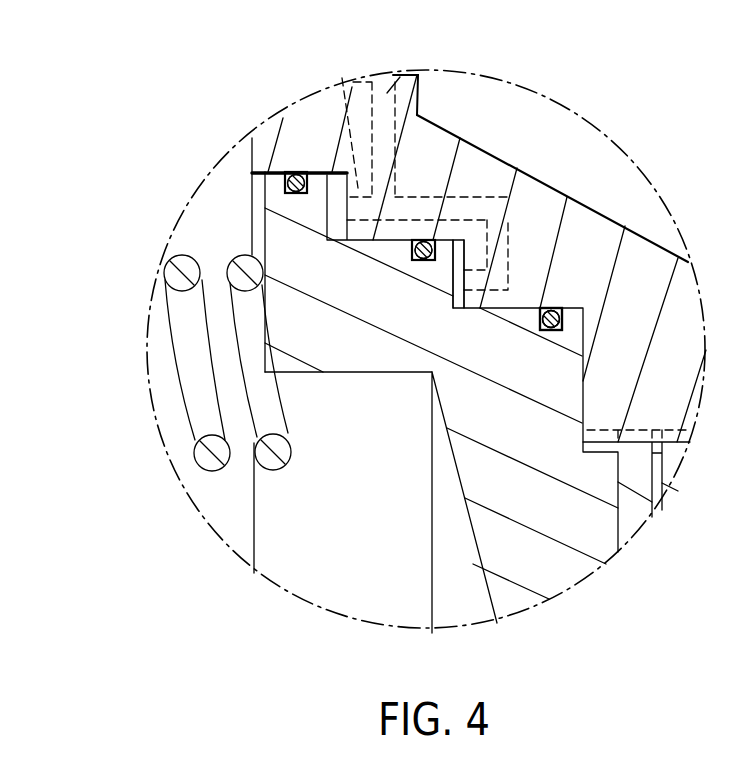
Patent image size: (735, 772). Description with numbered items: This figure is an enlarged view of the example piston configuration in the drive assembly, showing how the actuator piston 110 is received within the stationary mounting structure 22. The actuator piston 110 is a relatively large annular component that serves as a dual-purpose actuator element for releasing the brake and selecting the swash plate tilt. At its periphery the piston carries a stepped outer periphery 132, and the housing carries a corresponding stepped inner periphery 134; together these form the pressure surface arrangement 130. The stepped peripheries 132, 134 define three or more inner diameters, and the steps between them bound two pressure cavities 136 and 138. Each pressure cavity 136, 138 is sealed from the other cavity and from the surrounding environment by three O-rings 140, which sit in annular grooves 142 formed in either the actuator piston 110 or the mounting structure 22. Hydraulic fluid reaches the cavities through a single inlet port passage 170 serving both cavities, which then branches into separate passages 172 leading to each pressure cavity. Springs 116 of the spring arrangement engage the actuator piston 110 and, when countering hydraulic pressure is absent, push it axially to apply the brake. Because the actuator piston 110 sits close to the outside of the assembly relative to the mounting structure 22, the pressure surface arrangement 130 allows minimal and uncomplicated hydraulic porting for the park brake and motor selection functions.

The mounting structure 22 is at (645, 247).
The actuator piston 110 is at (570, 578).
The springs 116 is at (200, 465).
The pressure surface arrangement 130 is at (408, 233).
The stepped outer periphery 132 is at (525, 308).
The stepped inner periphery 134 is at (614, 243).
The pressure cavity 136 is at (456, 302).
The pressure cavity 138 is at (338, 172).
The O-rings 140 is at (303, 193).
The annular grooves 142 is at (541, 313).
The inlet port passage 170 is at (400, 74).
The passages 172 is at (537, 143).